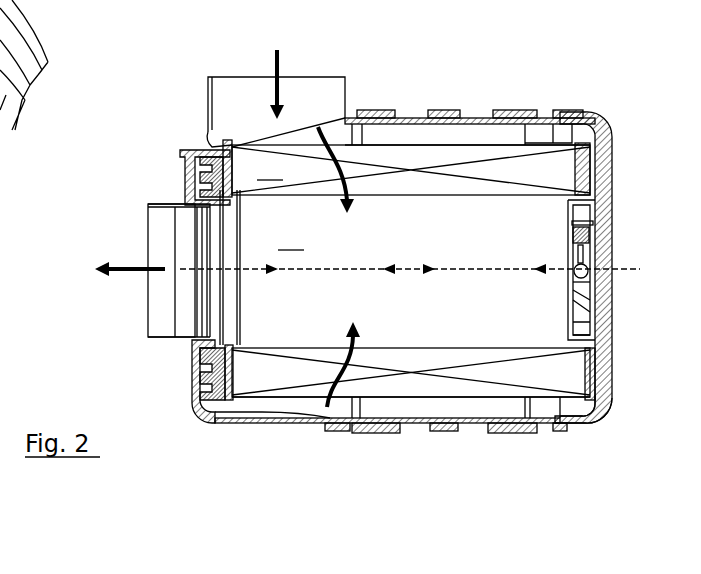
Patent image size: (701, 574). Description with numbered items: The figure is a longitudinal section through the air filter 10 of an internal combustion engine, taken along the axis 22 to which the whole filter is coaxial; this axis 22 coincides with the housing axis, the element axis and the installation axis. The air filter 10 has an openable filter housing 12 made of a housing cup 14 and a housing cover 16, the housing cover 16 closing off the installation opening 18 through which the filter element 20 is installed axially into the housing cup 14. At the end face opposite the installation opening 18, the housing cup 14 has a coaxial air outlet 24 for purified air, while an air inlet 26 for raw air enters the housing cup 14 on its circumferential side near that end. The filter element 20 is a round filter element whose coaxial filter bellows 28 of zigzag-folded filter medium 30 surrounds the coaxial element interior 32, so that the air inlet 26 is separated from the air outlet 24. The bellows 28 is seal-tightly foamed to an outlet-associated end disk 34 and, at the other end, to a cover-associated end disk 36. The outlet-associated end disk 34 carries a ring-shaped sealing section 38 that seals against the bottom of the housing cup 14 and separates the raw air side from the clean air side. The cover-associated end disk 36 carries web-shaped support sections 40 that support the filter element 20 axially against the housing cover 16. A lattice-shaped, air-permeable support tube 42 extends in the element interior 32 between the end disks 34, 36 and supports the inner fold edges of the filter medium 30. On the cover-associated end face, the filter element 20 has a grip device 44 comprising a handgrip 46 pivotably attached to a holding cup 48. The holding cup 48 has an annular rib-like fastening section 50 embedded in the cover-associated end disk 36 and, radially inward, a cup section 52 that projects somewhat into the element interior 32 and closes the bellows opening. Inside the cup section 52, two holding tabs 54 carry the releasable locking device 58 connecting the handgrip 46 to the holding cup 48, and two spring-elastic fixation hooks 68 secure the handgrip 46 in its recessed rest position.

The air filter 10 is at (582, 44).
The filter housing 12 is at (194, 424).
The housing cup 14 is at (268, 425).
The housing cover 16 is at (592, 416).
The installation opening 18 is at (540, 128).
The filter element 20 is at (410, 140).
The axis 22 is at (192, 272).
The air outlet 24 is at (160, 327).
The air inlet 26 is at (240, 90).
The filter bellows 28 is at (296, 137).
The filter medium 30 is at (411, 170).
The element interior 32 is at (262, 267).
The outlet-associated end disk 34 is at (215, 152).
The cover-associated end disk 36 is at (598, 137).
The sealing section 38 is at (200, 376).
The support sections 40 is at (597, 192).
The support tube 42 is at (296, 346).
The grip device 44 is at (590, 238).
The handgrip 46 is at (585, 253).
The holding cup 48 is at (562, 322).
The fastening section 50 is at (598, 372).
The cup section 52 is at (568, 312).
The holding tabs 54 is at (598, 272).
The locking device 58 is at (574, 268).
The fixation hooks 68 is at (570, 222).